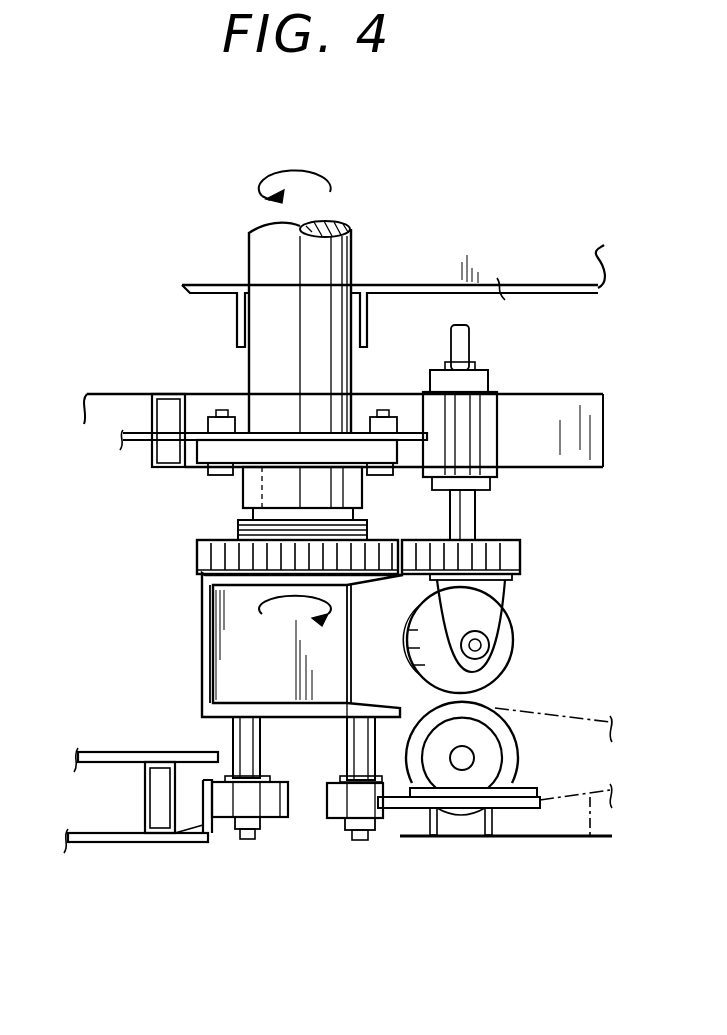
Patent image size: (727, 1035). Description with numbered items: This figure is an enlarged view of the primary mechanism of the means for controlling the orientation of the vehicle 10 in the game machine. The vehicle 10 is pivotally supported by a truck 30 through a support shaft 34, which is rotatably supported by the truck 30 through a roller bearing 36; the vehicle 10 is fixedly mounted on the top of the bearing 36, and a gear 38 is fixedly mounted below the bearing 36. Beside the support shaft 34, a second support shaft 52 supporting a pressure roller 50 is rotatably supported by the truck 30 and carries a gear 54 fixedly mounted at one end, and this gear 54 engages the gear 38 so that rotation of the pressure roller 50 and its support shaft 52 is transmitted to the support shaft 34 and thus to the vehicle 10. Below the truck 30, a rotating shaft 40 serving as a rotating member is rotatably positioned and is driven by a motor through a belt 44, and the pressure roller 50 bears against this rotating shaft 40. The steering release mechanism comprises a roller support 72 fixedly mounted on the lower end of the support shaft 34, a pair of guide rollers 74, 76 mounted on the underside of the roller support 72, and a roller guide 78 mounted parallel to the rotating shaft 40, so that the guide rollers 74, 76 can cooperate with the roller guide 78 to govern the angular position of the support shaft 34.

The vehicle 10 is at (393, 296).
The truck 30 is at (556, 415).
The support shaft 34 is at (268, 370).
The roller bearing 36 is at (252, 487).
The gear 38 is at (197, 556).
The support shaft 52 is at (475, 520).
The gear 54 is at (520, 558).
The pressure roller 50 is at (515, 665).
The rotating shaft 40 is at (517, 767).
The belt 44 is at (593, 842).
The roller support 72 is at (200, 630).
The guide roller 74 is at (335, 812).
The guide roller 76 is at (222, 812).
The roller guide 78 is at (207, 817).